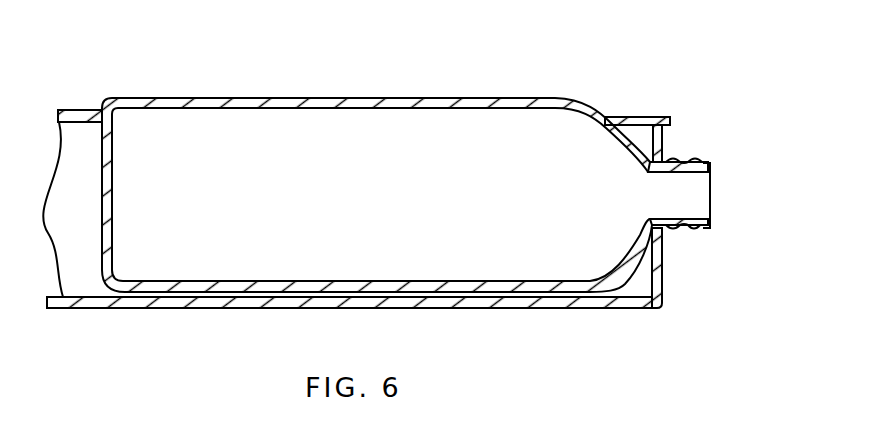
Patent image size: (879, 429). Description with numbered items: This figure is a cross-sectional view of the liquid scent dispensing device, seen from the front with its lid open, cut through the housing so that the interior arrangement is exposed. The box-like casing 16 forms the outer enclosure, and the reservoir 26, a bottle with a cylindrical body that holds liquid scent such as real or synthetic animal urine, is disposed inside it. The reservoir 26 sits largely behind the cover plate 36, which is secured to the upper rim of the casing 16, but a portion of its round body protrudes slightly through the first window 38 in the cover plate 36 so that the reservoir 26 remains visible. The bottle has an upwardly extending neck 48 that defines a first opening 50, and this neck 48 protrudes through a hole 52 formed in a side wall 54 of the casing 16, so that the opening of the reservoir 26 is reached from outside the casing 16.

The casing 16 is at (567, 309).
The reservoir 26 is at (284, 98).
The cover plate 36 is at (638, 117).
The first window 38 is at (607, 117).
The neck 48 is at (693, 161).
The first opening 50 is at (713, 190).
The hole 52 is at (663, 161).
The side wall 54 is at (665, 270).